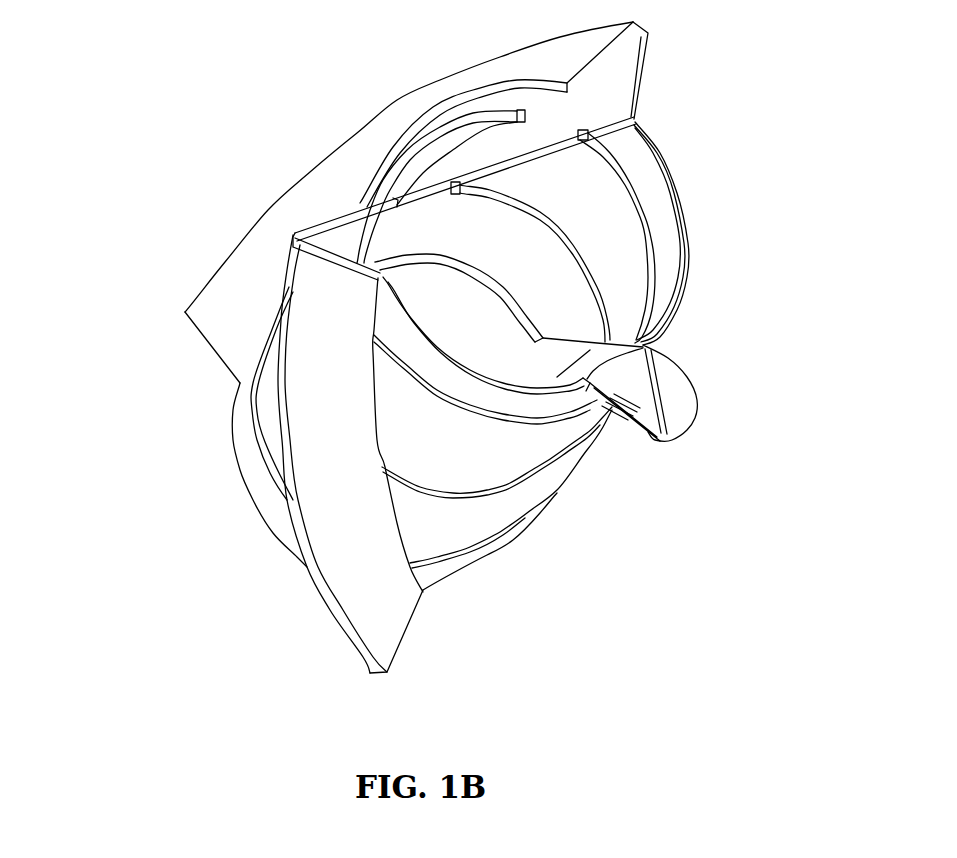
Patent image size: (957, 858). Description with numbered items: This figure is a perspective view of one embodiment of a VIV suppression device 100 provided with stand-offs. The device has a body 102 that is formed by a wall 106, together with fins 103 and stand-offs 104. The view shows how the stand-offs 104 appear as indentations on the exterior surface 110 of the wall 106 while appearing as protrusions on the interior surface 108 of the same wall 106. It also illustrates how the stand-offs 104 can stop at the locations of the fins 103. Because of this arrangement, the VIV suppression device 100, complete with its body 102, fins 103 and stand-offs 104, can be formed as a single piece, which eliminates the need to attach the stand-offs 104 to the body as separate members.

The VIV suppression device 100 is at (657, 118).
The body 102 is at (537, 497).
The fins 103 is at (255, 212).
The stand-offs 104 is at (250, 412).
The wall 106 is at (666, 152).
The interior surface 108 is at (637, 283).
The exterior surface 110 is at (497, 455).